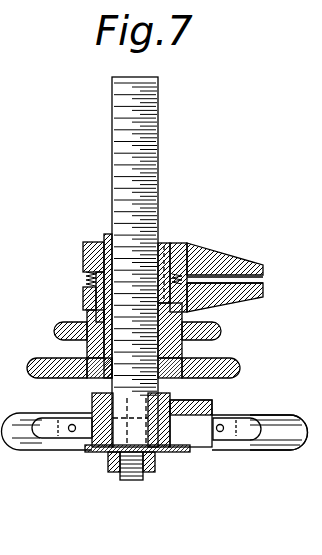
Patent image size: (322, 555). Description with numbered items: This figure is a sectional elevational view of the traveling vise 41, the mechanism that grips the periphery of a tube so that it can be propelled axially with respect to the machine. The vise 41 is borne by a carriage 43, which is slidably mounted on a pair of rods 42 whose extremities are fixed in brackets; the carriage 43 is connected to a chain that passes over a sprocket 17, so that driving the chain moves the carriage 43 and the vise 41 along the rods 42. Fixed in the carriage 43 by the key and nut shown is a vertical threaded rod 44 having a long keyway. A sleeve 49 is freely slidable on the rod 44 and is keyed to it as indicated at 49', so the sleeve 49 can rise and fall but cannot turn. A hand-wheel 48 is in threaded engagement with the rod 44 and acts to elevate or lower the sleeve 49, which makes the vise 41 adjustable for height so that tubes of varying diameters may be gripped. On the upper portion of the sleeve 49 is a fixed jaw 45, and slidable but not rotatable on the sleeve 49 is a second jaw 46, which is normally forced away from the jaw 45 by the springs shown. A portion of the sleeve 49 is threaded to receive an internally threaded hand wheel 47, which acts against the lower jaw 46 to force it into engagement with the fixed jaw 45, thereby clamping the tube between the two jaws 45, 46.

The vertical threaded rod 44 is at (156, 104).
The key 49' is at (81, 278).
The vise 41 is at (195, 243).
The jaw 45 is at (200, 256).
The second jaw 46 is at (222, 298).
The internally threaded hand wheel 47 is at (62, 322).
The hand-wheel 48 is at (43, 358).
The sleeve 49 is at (150, 341).
The sprocket 17 is at (58, 443).
The rods 42 is at (263, 430).
The carriage 43 is at (183, 448).